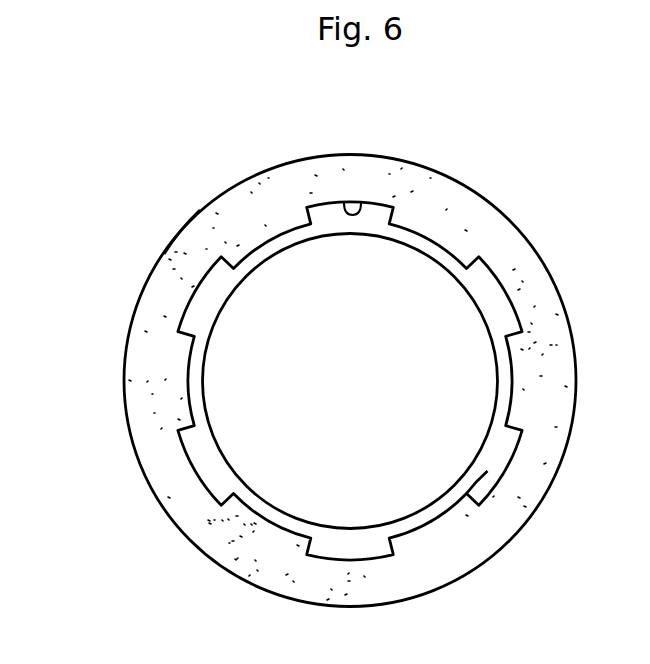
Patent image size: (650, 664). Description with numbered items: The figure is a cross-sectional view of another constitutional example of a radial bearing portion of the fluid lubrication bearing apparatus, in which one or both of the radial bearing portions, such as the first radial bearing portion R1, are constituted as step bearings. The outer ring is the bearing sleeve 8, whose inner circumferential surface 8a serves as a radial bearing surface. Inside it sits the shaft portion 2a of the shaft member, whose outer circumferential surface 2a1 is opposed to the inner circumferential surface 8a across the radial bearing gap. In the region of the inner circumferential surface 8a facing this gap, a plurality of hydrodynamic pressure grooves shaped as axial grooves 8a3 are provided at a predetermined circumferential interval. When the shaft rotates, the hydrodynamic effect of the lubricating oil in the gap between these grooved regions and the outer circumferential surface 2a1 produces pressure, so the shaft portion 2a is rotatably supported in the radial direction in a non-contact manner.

The bearing sleeve 8 is at (468, 205).
The inner circumferential surface 8a is at (456, 259).
The axial groove 8a3 is at (359, 203).
The shaft portion 2a is at (474, 396).
The outer circumferential surface 2a1 is at (483, 448).
The first radial bearing portion R1 is at (151, 247).